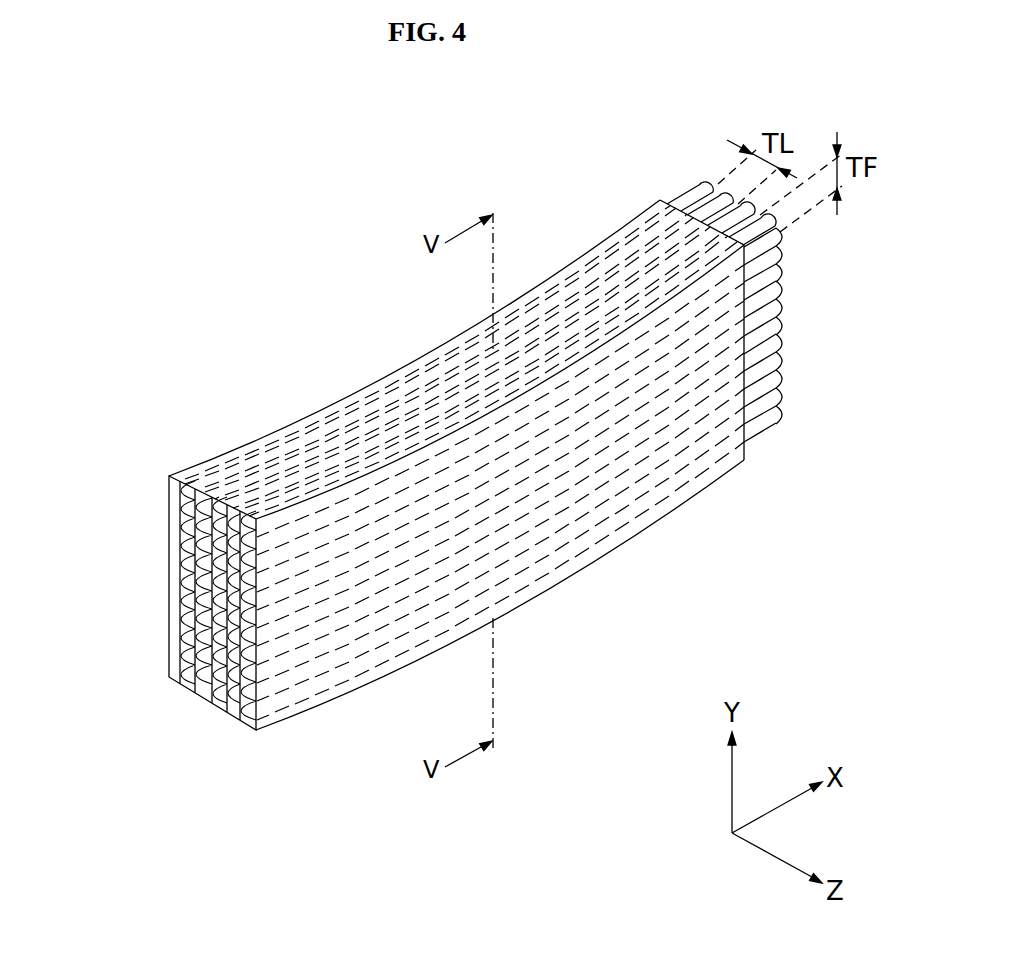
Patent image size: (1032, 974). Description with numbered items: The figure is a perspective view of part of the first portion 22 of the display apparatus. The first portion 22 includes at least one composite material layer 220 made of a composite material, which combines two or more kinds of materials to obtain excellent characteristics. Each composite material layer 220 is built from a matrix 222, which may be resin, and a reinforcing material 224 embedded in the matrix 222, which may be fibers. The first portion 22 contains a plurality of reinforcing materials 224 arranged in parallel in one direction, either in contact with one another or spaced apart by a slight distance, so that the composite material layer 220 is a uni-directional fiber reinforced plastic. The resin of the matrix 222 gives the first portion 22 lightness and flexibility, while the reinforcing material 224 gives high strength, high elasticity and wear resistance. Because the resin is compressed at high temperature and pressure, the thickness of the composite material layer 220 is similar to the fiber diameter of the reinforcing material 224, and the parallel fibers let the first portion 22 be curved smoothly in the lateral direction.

The first portion 22 is at (419, 547).
The composite material layer 220 is at (193, 674).
The matrix 222 is at (218, 652).
The reinforcing material 224 is at (283, 703).